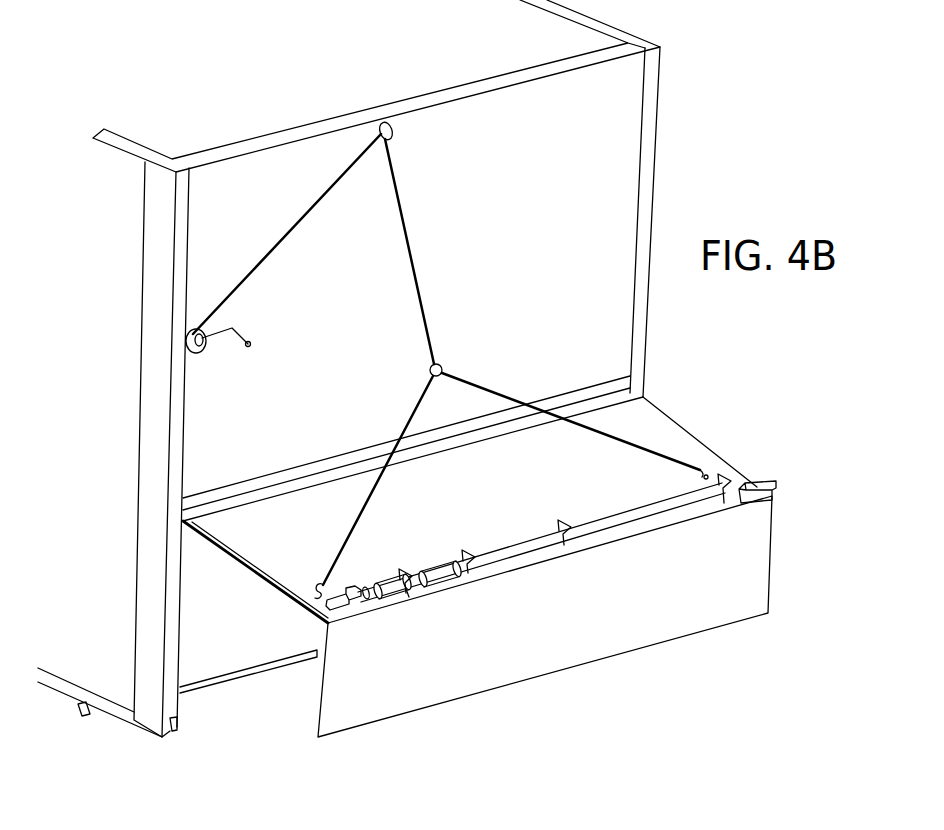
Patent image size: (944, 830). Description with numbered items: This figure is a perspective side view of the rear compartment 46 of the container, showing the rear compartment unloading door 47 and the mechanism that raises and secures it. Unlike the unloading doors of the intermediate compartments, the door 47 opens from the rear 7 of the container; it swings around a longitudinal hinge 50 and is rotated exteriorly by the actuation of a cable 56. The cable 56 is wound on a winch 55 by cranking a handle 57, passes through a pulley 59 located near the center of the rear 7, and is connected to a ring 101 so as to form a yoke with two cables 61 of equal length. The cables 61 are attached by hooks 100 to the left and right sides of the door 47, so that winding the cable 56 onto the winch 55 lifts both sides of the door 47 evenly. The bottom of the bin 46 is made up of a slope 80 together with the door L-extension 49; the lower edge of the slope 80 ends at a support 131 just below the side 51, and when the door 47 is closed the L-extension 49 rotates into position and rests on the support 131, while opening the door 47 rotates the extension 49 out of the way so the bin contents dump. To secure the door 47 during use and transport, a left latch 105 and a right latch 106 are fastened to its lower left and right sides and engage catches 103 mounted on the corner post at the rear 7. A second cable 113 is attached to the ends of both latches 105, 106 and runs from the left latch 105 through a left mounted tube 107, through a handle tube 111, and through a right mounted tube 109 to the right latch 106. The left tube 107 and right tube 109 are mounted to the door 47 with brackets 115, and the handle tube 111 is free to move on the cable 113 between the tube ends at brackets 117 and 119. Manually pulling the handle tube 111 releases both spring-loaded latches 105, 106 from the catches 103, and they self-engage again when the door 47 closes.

The rear compartment 46 is at (376, 80).
The rear 7 is at (592, 107).
The longitudinal hinge 50 is at (332, 467).
The rear compartment unloading door 47 is at (315, 533).
The door L-extension 49 is at (433, 686).
The slope 80 is at (252, 640).
The side 51 is at (90, 688).
The support 131 is at (80, 714).
The catch 103 is at (178, 728).
The winch 55 is at (211, 358).
The handle 57 is at (243, 331).
The pulley 59 is at (393, 133).
The cable 56 is at (423, 283).
The ring 101 is at (443, 367).
The cables 61 is at (372, 492).
The right mounted tube 109 is at (507, 546).
The left latch 105 is at (353, 583).
The left mounted tube 107 is at (390, 577).
The handle tube 111 is at (440, 567).
The cable 113 is at (415, 590).
The bracket 117 is at (467, 573).
The bracket 119 is at (407, 593).
The brackets 115 is at (565, 540).
The hooks 100 is at (712, 464).
The right latch 106 is at (768, 482).